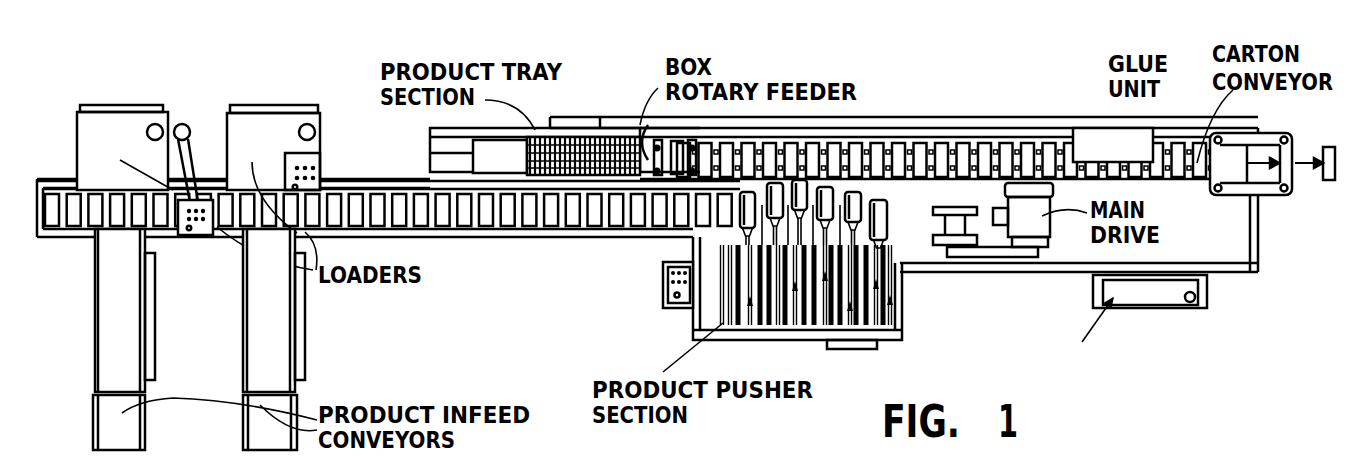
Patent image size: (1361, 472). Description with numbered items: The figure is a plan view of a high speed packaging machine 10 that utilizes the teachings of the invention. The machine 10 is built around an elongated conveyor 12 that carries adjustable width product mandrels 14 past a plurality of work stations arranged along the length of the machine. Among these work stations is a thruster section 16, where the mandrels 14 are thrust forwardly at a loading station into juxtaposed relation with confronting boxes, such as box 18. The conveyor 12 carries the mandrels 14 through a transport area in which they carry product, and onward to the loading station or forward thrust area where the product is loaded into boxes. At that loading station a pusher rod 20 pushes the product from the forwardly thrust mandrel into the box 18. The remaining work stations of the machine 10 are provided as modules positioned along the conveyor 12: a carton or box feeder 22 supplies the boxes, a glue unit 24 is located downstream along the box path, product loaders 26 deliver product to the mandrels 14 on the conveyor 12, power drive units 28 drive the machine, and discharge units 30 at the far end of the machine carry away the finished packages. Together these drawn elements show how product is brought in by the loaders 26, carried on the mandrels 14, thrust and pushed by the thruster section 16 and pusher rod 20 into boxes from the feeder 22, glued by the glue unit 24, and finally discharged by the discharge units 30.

The packaging machine 10 is at (985, 107).
The conveyor 12 is at (402, 203).
The product mandrels 14 is at (645, 207).
The thruster section 16 is at (815, 210).
The box 18 is at (921, 150).
The pusher rod 20 is at (834, 312).
The carton or box feeder 22 is at (820, 112).
The glue unit 24 is at (1123, 147).
The product loaders 26 is at (240, 400).
The power drive units 28 is at (952, 228).
The discharge units 30 is at (1295, 145).